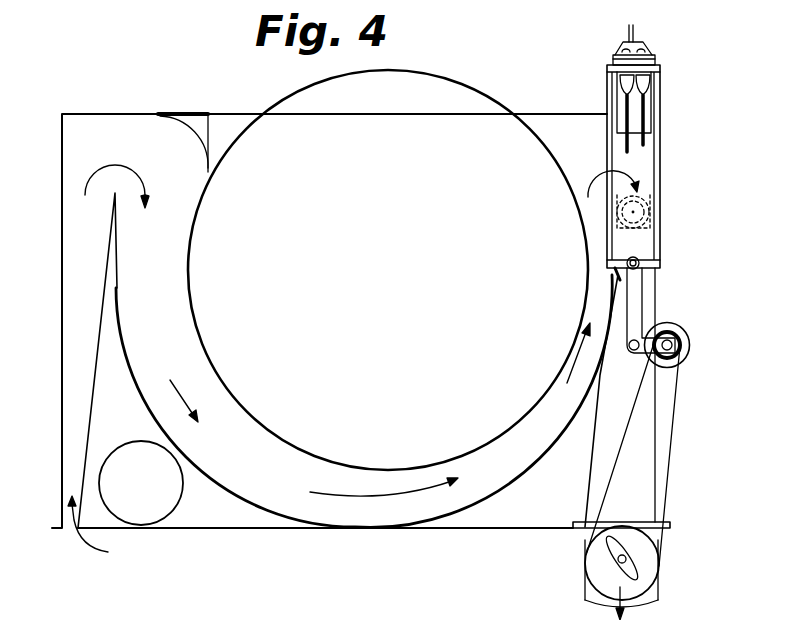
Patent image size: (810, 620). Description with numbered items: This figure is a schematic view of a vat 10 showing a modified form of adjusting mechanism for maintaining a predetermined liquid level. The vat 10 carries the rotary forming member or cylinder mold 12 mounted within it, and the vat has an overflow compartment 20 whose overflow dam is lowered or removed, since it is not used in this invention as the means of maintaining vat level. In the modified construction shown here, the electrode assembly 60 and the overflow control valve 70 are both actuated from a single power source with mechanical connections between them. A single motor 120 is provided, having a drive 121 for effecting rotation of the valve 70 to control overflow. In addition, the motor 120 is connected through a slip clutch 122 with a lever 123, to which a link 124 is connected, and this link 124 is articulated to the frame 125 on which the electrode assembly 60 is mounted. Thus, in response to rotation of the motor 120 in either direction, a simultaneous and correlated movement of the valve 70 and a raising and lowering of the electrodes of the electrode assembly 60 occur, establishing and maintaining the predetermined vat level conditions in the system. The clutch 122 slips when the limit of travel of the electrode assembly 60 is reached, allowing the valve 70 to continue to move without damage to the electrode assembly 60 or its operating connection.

The vat 10 is at (61, 249).
The cylinder mold 12 is at (481, 92).
The overflow compartment 20 is at (650, 287).
The electrode assembly 60 is at (650, 60).
The overflow control valve 70 is at (635, 573).
The motor 120 is at (673, 345).
The drive 121 is at (673, 418).
The slip clutch 122 is at (683, 353).
The lever 123 is at (601, 378).
The link 124 is at (638, 312).
The frame 125 is at (660, 218).